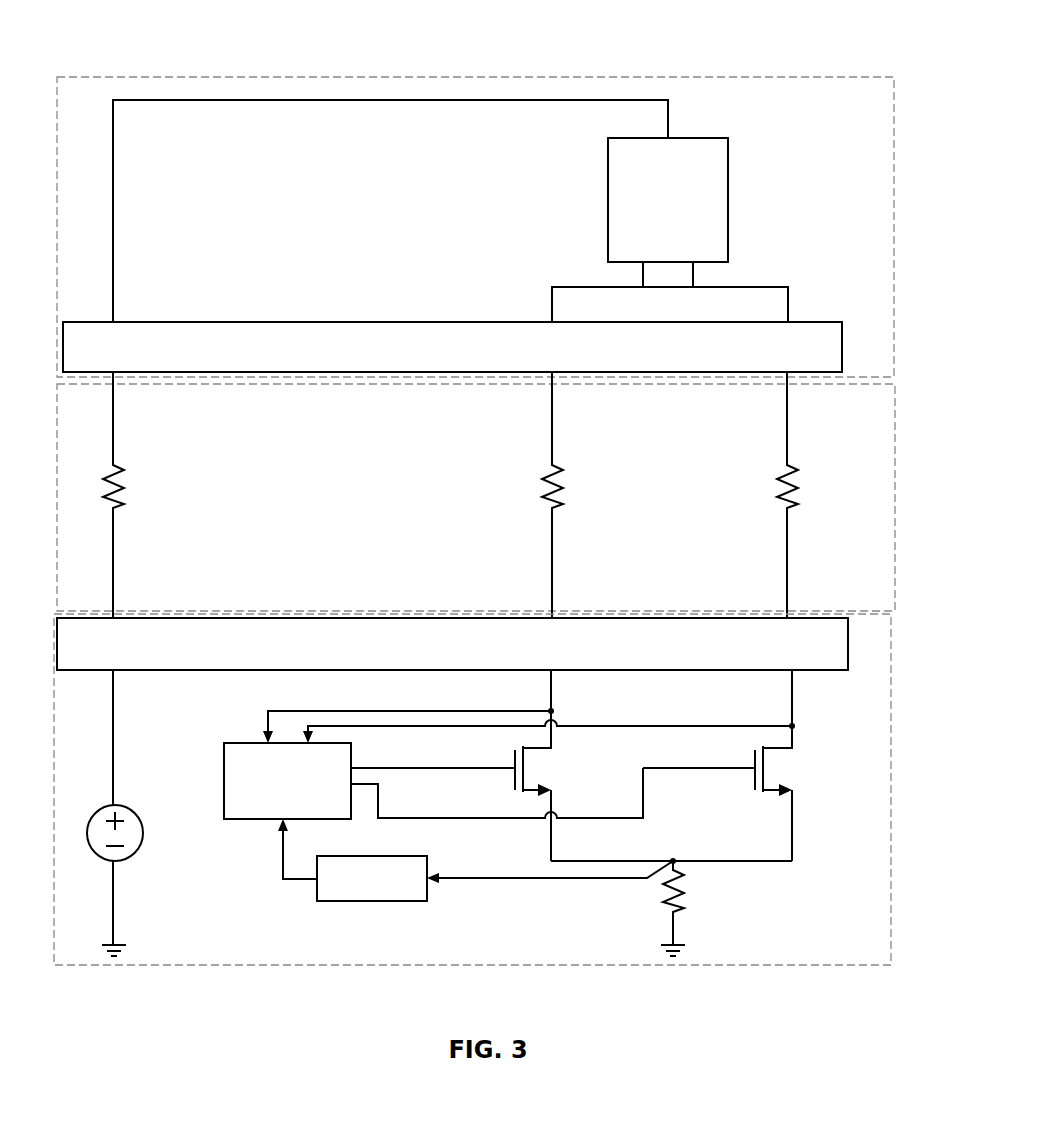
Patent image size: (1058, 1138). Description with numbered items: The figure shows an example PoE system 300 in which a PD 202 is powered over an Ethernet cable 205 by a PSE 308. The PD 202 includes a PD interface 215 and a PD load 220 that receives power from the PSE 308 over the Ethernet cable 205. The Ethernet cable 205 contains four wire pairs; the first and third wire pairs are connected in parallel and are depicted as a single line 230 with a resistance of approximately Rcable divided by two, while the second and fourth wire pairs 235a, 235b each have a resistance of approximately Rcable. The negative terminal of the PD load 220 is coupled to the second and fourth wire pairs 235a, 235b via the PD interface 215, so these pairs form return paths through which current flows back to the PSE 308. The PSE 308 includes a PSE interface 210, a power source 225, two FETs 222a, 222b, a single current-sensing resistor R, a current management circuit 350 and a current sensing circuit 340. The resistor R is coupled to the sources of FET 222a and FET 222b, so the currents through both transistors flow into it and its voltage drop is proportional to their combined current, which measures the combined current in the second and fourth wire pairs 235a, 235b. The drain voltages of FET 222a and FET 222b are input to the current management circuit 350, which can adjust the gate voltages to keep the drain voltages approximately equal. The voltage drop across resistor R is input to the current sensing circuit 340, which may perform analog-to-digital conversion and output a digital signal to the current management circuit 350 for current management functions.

The PoE system 300 is at (833, 28).
The PD 202 is at (485, 75).
The PD load 220 is at (729, 200).
The PD interface 215 is at (385, 318).
The Ethernet cable 205 is at (896, 455).
The single line 230 is at (117, 428).
The second wire pair 235a is at (555, 427).
The fourth wire pair 235b is at (790, 427).
The PSE 308 is at (700, 966).
The PSE interface 210 is at (680, 671).
The power source 225 is at (127, 805).
The current management circuit 350 is at (352, 752).
The FET 222a is at (556, 775).
The FET 222b is at (794, 775).
The current sensing circuit 340 is at (383, 856).